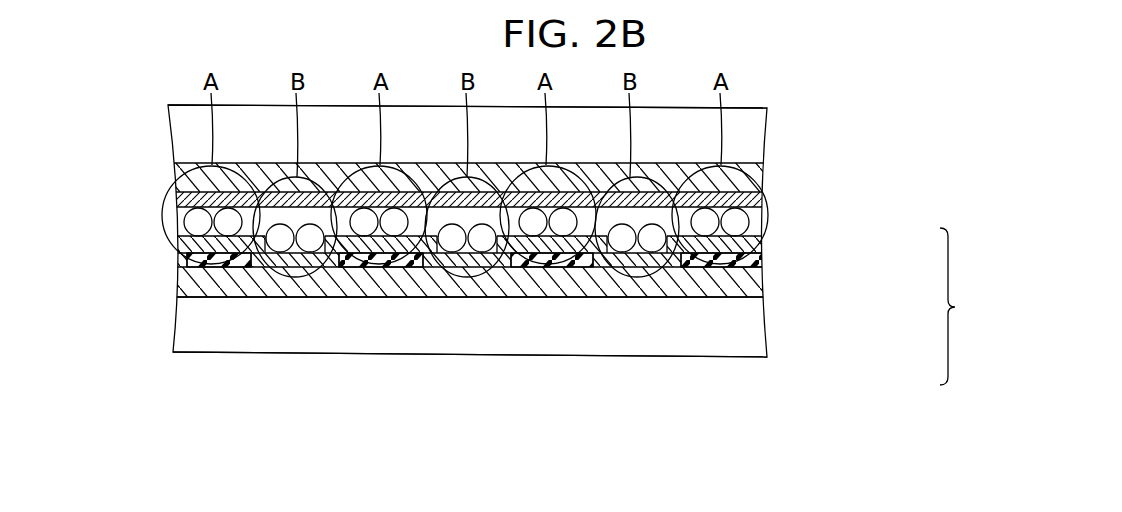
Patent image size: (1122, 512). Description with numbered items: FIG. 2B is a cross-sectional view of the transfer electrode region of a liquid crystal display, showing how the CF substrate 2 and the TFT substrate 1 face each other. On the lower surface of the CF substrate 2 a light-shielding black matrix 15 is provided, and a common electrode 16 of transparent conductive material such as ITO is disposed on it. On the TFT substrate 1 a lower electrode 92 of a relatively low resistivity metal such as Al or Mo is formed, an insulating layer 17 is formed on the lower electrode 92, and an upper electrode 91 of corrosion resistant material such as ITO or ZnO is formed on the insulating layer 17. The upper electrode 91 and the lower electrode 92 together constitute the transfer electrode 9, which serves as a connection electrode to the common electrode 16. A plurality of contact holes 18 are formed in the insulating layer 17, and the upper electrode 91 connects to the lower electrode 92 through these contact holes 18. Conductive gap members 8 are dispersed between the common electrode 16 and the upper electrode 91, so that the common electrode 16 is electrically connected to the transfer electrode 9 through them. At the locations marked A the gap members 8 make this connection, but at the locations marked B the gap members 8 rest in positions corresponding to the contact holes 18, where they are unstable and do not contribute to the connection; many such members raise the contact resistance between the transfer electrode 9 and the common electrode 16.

The CF substrate 2 is at (752, 130).
The black matrix 15 is at (752, 173).
The common electrode 16 is at (753, 205).
The upper electrode 91 is at (759, 247).
The insulating layer 17 is at (760, 262).
The lower electrode 92 is at (758, 290).
The TFT substrate 1 is at (760, 330).
The conductive gap member 8 is at (202, 225).
The contact hole 18 is at (462, 265).
The transfer electrode 9 is at (955, 307).